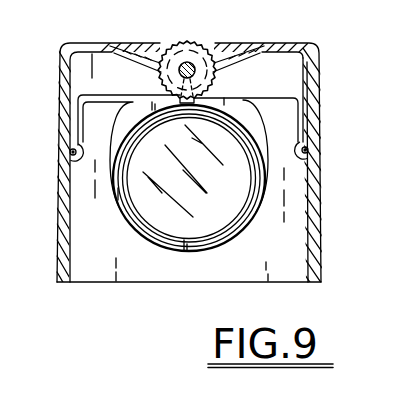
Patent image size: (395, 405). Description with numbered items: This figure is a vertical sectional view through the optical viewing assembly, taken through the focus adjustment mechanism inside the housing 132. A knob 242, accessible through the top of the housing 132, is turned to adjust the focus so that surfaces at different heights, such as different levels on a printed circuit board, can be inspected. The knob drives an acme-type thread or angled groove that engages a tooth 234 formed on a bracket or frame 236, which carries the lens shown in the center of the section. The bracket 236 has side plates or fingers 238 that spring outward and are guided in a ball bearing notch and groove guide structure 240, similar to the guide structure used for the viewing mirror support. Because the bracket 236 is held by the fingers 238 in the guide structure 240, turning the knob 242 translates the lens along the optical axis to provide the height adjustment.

The housing 132 is at (320, 260).
The tooth 234 is at (214, 80).
The bracket or frame 236 is at (247, 213).
The side plates or fingers 238 is at (62, 116).
The ball bearing notch and groove guide structure 240 is at (67, 152).
The knob 242 is at (189, 42).